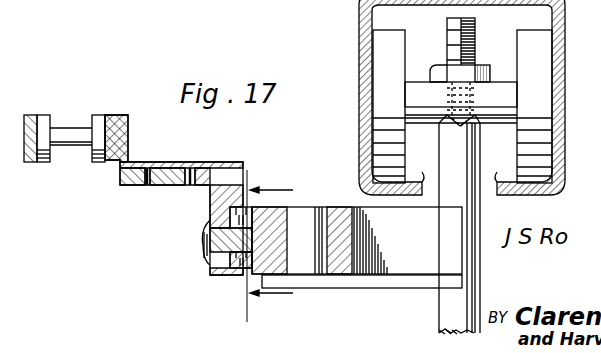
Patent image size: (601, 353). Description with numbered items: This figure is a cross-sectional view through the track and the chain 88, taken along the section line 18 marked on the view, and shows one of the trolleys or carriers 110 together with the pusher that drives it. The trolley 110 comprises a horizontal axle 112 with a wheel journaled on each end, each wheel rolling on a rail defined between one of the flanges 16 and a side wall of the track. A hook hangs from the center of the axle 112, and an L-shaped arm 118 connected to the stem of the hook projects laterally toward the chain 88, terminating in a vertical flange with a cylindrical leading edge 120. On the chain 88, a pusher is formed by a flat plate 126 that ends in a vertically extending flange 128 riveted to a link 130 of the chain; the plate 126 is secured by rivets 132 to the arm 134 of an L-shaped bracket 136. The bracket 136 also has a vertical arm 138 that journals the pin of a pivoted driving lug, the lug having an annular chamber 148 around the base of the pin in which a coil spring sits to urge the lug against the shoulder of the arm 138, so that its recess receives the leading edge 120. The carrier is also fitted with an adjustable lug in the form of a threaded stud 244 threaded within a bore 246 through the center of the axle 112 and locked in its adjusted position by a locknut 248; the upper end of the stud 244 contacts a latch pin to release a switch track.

The flange 16 is at (421, 178).
The section line 18 is at (270, 247).
The chain 88 is at (33, 113).
The trolley 110 is at (547, 72).
The horizontal axle 112 is at (413, 85).
The L-shaped arm 118 is at (398, 284).
The cylindrical leading edge 120 is at (300, 208).
The flat plate 126 is at (215, 164).
The vertically extending flange 128 is at (129, 150).
The link 130 is at (118, 114).
The rivets 132 is at (181, 160).
The arm 134 is at (165, 186).
The L-shaped bracket 136 is at (124, 187).
The vertical arm 138 is at (213, 205).
The annular chamber 148 is at (240, 264).
The threaded stud 244 is at (476, 32).
The bore 246 is at (471, 86).
The locknut 248 is at (490, 77).